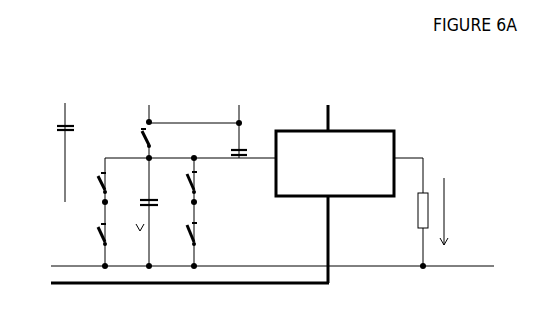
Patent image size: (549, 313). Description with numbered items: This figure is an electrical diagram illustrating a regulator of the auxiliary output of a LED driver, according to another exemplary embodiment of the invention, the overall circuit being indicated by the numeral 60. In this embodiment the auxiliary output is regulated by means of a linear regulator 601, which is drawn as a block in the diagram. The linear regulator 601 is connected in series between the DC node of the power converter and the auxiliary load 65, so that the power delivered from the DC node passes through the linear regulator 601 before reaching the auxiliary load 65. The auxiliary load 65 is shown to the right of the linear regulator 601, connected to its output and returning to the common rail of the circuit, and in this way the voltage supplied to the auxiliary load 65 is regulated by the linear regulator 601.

The switched-capacitor voltage converter circuit 60 is at (73, 77).
The auxiliary load 65 is at (429, 203).
The linear regulator 601 is at (311, 171).